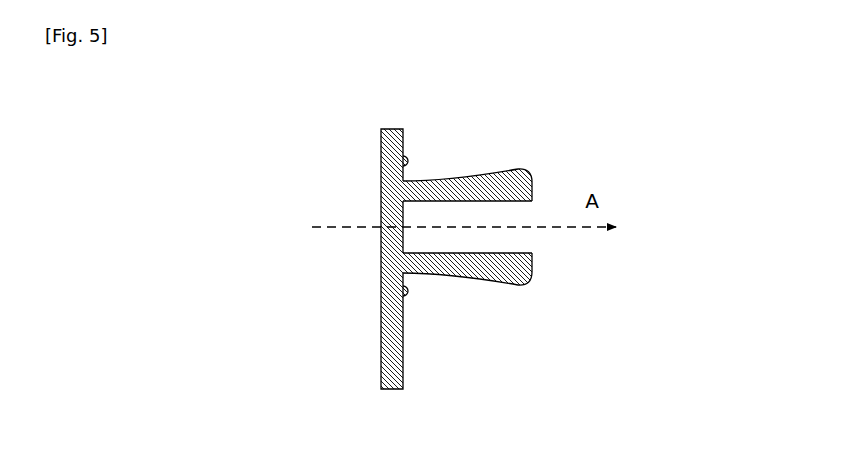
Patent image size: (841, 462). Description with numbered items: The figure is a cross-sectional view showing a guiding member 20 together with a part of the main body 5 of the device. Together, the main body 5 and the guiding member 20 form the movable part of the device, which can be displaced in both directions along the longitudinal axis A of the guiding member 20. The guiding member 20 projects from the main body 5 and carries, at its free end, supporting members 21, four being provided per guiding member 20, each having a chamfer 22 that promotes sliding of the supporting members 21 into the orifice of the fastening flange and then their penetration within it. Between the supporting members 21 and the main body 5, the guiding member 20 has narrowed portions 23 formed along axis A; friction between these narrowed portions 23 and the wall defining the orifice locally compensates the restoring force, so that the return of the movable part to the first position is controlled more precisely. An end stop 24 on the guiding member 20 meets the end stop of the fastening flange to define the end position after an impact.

The main body 5 is at (383, 340).
The guiding member 20 is at (555, 138).
The supporting member 21 is at (534, 187).
The chamfer 22 is at (527, 173).
The narrowed portion 23 is at (473, 172).
The end stop 24 is at (408, 160).